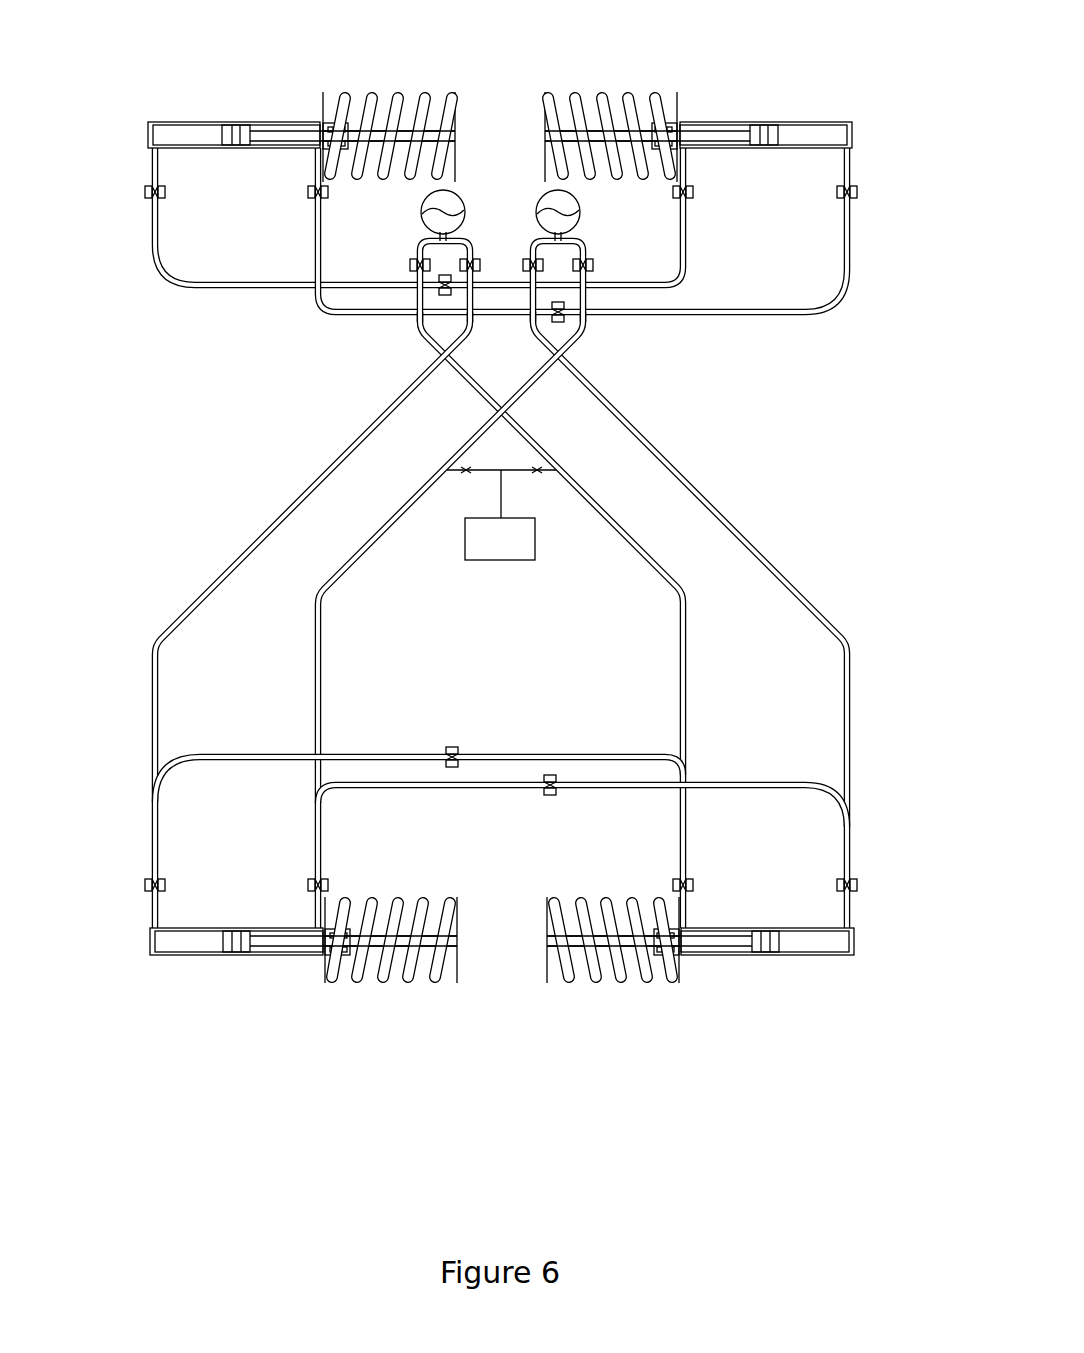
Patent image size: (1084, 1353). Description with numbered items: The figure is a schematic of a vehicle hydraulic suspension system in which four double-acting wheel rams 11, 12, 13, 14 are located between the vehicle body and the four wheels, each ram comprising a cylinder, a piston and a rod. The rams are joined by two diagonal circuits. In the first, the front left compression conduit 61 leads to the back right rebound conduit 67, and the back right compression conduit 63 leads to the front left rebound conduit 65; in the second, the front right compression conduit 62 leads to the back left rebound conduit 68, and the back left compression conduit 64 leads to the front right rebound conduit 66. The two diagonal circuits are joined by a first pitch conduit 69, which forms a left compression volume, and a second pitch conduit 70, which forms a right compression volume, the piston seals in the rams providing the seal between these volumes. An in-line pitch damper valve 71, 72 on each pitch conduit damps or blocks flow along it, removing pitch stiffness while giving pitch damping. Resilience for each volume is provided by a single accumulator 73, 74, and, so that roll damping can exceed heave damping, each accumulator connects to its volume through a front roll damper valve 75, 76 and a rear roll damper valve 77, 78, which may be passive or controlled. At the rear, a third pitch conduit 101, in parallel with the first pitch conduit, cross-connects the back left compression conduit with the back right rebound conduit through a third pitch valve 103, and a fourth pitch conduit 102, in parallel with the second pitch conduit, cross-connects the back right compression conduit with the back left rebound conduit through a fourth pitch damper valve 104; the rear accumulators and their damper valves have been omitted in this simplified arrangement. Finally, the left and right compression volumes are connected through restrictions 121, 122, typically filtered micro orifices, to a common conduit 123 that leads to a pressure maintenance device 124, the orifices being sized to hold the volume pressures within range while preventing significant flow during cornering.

The wheel ram 11 is at (228, 80).
The wheel ram 12 is at (772, 80).
The wheel ram 13 is at (758, 1008).
The wheel ram 14 is at (233, 1008).
The front left compression conduit 61 is at (155, 226).
The front right compression conduit 62 is at (842, 227).
The back right compression conduit 63 is at (843, 852).
The back left compression conduit 64 is at (158, 852).
The front left rebound conduit 65 is at (315, 226).
The front right rebound conduit 66 is at (685, 225).
The back right rebound conduit 67 is at (688, 852).
The back left rebound conduit 68 is at (313, 852).
The first pitch conduit 69 is at (428, 290).
The second pitch conduit 70 is at (570, 318).
The pitch damper valve 71 is at (447, 297).
The pitch damper valve 72 is at (555, 322).
The accumulator 73 is at (448, 203).
The accumulator 74 is at (548, 202).
The front roll damper valve 75 is at (408, 262).
The front roll damper valve 76 is at (592, 262).
The rear roll damper valve 77 is at (527, 260).
The rear roll damper valve 78 is at (470, 260).
The third pitch conduit 101 is at (390, 752).
The fourth pitch conduit 102 is at (603, 788).
The third pitch valve 103 is at (455, 747).
The fourth pitch damper valve 104 is at (547, 797).
The restriction 121 is at (538, 477).
The restriction 122 is at (463, 477).
The common conduit 123 is at (500, 493).
The pressure maintenance device 124 is at (517, 553).